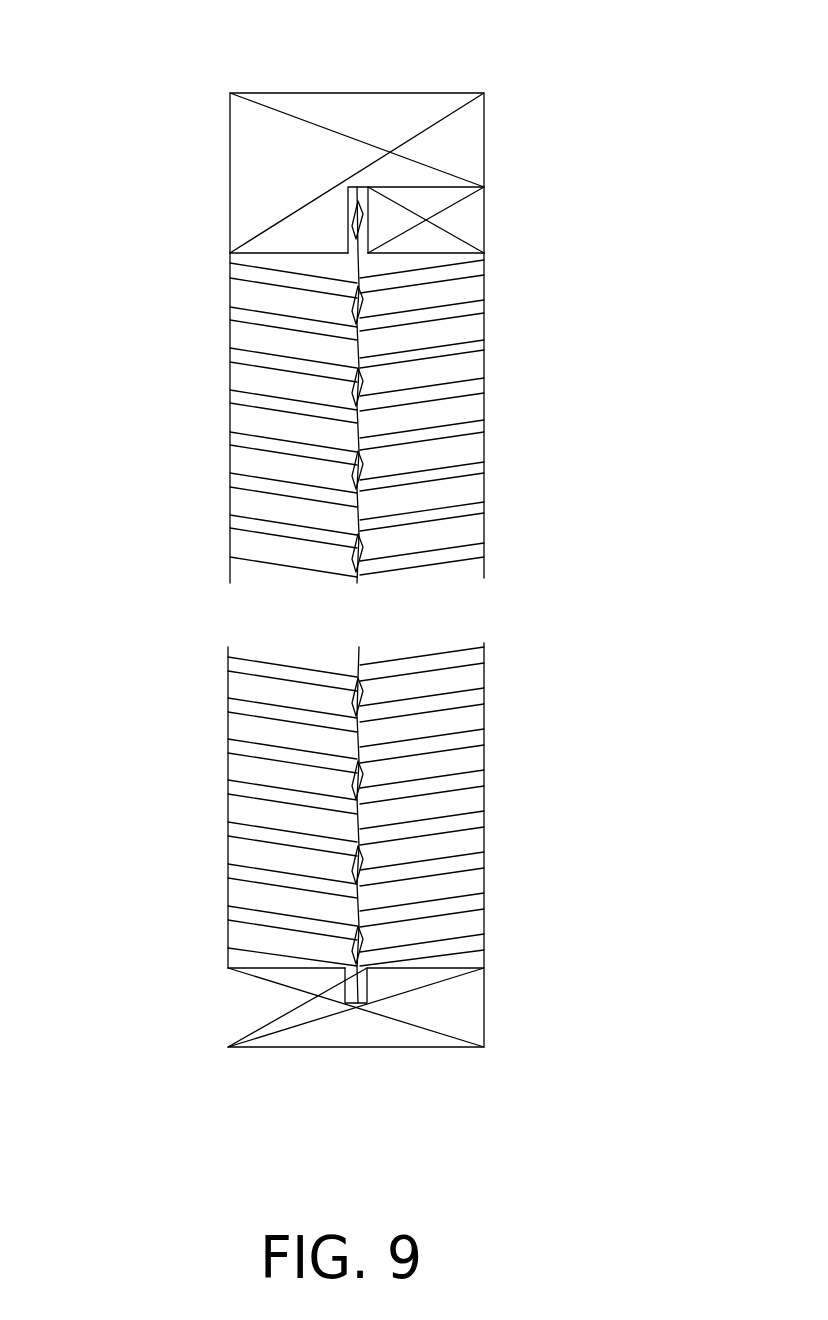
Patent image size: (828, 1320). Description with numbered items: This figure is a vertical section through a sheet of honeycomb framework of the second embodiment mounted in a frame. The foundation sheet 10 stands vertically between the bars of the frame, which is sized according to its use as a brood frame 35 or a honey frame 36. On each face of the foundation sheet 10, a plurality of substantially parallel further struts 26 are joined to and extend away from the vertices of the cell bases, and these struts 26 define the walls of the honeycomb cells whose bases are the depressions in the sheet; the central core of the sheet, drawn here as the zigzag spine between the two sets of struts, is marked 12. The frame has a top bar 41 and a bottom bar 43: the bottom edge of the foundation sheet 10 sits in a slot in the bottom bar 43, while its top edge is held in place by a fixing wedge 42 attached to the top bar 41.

The foundation sheet 10 is at (353, 777).
The thread root / core 12 is at (357, 573).
The further struts 26 is at (455, 505).
The brood frame 35 is at (477, 67).
The honey frame 36 is at (355, 570).
The top bar 41 is at (438, 150).
The fixing wedge 42 is at (456, 226).
The bottom bar 43 is at (424, 1017).